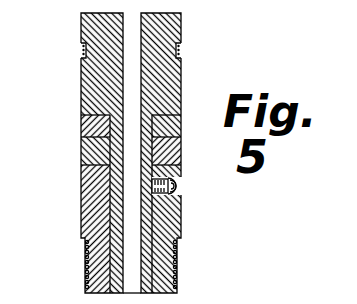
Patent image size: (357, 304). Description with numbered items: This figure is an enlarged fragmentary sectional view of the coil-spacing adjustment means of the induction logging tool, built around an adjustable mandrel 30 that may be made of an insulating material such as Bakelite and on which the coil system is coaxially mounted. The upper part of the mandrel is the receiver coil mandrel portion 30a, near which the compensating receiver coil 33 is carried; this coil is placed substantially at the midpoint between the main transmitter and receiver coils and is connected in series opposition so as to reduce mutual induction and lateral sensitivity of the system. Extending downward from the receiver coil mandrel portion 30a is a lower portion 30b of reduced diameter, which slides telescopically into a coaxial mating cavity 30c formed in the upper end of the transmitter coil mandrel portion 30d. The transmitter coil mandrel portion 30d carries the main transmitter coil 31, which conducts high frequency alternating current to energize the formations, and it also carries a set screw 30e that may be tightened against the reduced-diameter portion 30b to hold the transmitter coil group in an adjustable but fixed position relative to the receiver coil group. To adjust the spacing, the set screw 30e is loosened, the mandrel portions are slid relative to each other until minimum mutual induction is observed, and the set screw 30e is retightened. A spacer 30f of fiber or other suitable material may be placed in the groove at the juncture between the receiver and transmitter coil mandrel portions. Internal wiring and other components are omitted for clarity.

The adjustable mandrel 30 is at (80, 92).
The receiver coil mandrel portion 30a is at (181, 77).
The lower portion of reduced diameter 30b is at (147, 227).
The coaxial mating cavity 30c is at (81, 165).
The transmitter coil mandrel portion 30d is at (81, 198).
The set screw 30e is at (184, 190).
The spacer 30f is at (81, 123).
The main transmitter coil 31 is at (84, 262).
The compensating receiver coil 33 is at (83, 50).